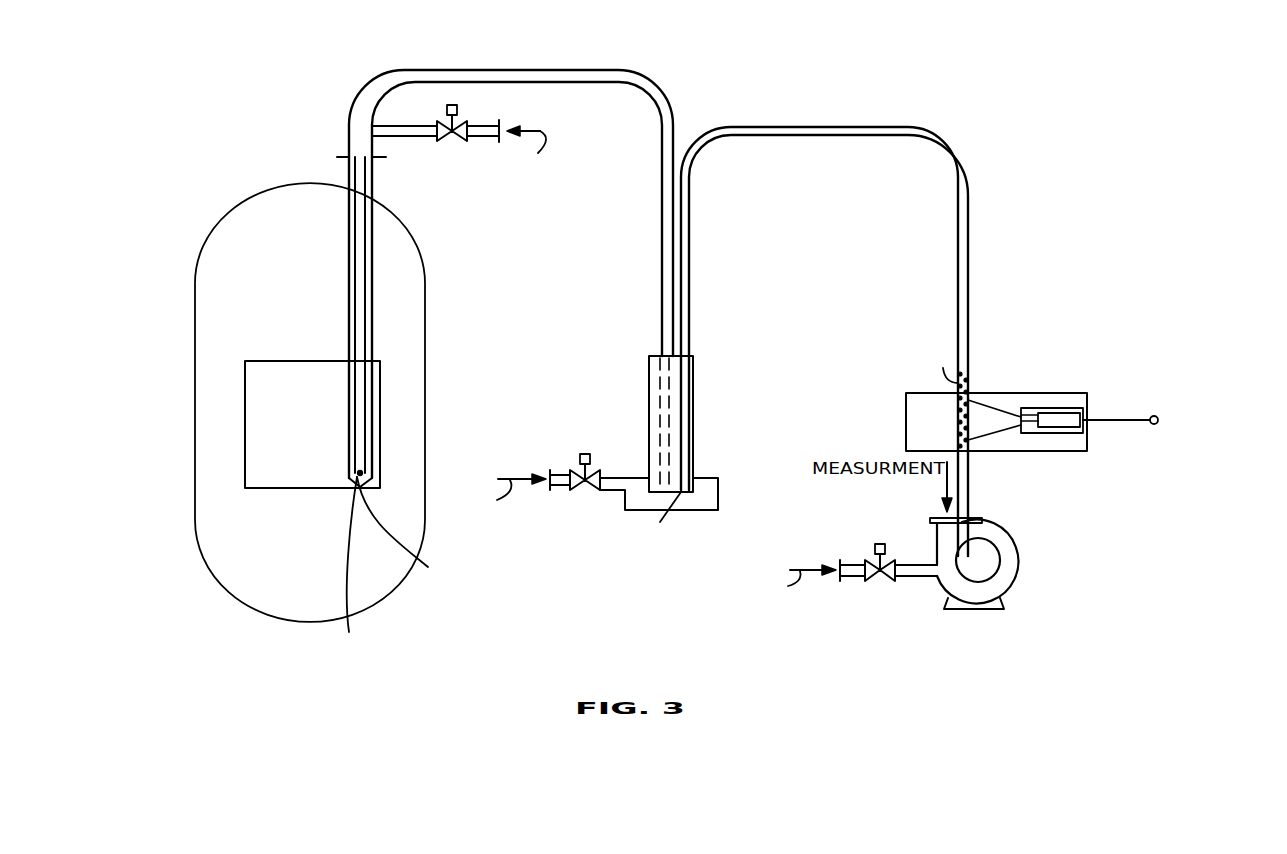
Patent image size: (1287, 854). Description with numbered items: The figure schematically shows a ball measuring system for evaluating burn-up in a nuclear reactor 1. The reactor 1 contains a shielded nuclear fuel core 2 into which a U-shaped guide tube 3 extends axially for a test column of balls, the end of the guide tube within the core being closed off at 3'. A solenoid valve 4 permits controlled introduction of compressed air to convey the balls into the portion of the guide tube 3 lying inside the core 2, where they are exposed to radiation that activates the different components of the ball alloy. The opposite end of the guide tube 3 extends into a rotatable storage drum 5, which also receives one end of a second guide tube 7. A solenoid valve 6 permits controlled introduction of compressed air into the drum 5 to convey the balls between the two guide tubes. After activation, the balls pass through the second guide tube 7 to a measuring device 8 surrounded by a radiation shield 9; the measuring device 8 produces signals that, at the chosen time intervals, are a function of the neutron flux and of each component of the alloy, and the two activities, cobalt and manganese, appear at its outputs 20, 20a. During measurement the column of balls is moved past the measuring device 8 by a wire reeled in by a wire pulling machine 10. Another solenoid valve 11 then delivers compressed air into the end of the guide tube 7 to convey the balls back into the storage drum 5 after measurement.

The nuclear reactor 1 is at (280, 186).
The nuclear fuel core 2 is at (283, 489).
The guide tube 3 is at (583, 265).
The closed-off end of guide tube 3' is at (427, 413).
The solenoid valve 4 is at (483, 52).
The rotatable storage drum 5 is at (733, 336).
The solenoid valve 6 is at (585, 407).
The second guide tube 7 is at (730, 63).
The measuring device 8 is at (1047, 419).
The radiation shield 9 is at (1022, 397).
The wire pulling machine 10 is at (948, 597).
The solenoid valve 11 is at (867, 512).
The output 20 is at (1138, 417).
The output 20a is at (1190, 417).